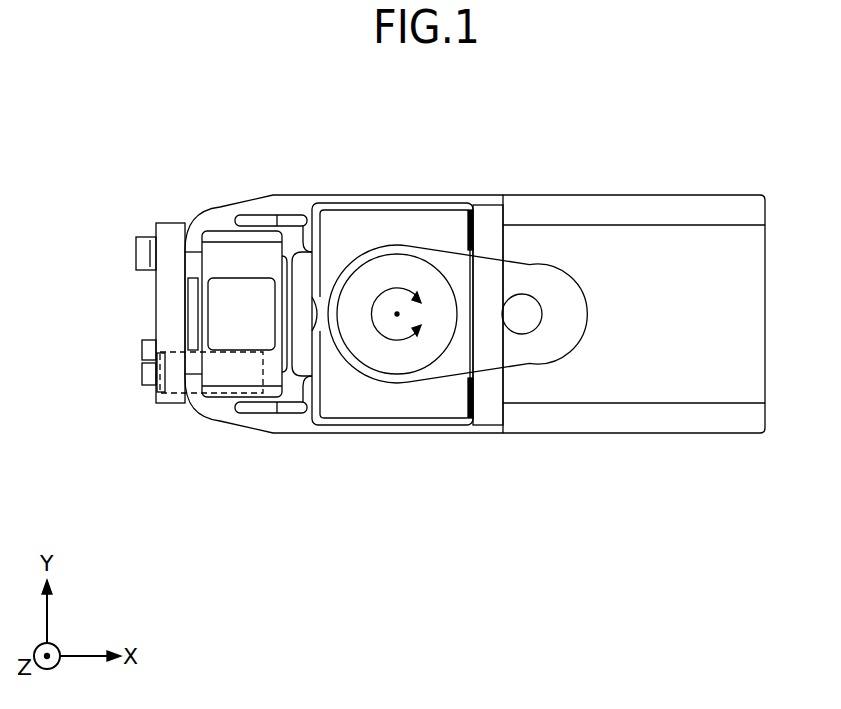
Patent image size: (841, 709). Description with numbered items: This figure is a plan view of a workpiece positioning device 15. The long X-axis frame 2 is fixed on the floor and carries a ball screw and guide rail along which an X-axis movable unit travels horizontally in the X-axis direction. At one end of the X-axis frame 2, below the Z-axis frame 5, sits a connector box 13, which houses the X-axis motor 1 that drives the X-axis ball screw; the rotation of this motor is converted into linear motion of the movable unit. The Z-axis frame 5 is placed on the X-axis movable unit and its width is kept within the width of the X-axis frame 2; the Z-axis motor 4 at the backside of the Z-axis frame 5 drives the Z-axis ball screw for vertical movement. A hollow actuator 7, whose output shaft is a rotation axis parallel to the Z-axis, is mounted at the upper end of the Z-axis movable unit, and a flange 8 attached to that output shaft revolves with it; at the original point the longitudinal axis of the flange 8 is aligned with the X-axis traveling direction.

The X-axis motor 1 is at (227, 368).
The X-axis frame 2 is at (582, 195).
The Z-axis motor 4 is at (248, 310).
The Z-axis frame 5 is at (397, 220).
The hollow actuator 7 is at (358, 283).
The flange 8 is at (478, 268).
The connector box 13 is at (168, 247).
The workpiece positioning device 15 is at (715, 149).